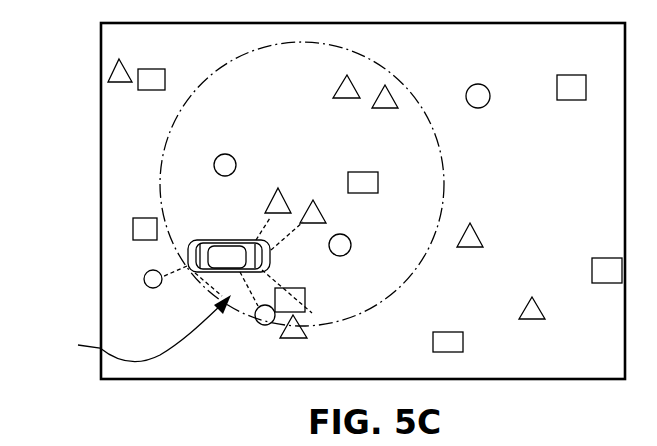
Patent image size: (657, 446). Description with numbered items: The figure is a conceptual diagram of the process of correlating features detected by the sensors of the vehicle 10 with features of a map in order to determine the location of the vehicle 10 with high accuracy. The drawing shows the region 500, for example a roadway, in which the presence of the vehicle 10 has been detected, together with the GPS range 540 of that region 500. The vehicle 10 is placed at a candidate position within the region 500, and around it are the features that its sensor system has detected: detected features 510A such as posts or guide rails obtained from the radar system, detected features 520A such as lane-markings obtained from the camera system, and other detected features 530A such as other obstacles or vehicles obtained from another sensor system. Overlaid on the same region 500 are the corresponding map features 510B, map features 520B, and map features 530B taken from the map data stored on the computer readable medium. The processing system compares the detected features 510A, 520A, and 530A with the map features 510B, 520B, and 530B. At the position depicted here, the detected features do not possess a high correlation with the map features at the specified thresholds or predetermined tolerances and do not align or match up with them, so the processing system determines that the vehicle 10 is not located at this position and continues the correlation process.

The region 500 is at (515, 128).
The vehicle 10 is at (222, 254).
The detected features 520A is at (270, 202).
The map features 520B is at (335, 79).
The other detected features 530A is at (144, 283).
The map features 530B is at (214, 167).
The detected features 510A is at (306, 305).
The map features 510B is at (352, 190).
The GPS range 540 is at (138, 328).